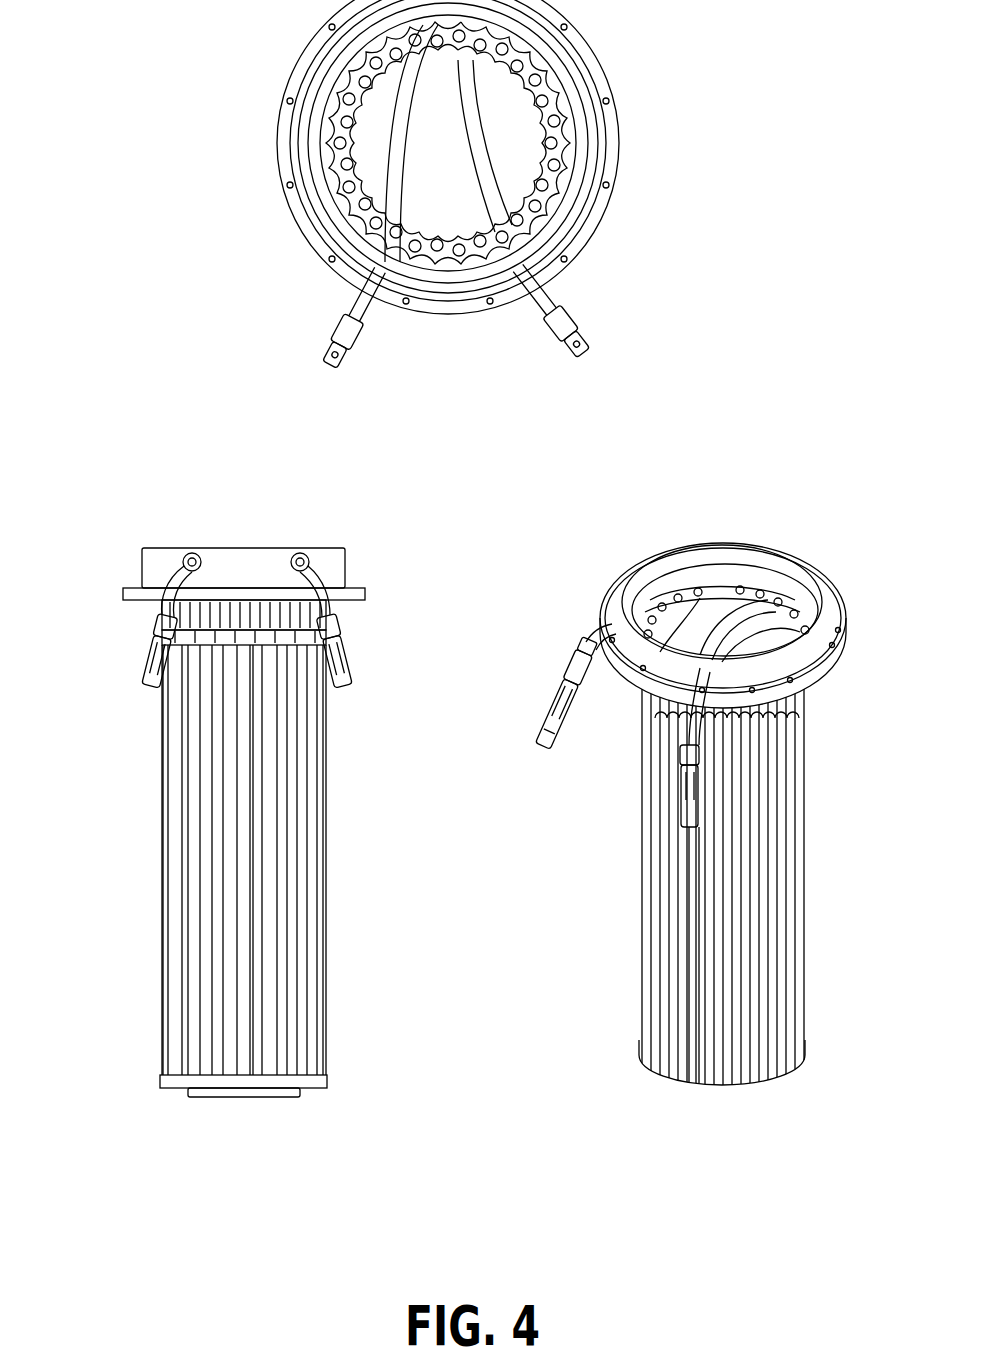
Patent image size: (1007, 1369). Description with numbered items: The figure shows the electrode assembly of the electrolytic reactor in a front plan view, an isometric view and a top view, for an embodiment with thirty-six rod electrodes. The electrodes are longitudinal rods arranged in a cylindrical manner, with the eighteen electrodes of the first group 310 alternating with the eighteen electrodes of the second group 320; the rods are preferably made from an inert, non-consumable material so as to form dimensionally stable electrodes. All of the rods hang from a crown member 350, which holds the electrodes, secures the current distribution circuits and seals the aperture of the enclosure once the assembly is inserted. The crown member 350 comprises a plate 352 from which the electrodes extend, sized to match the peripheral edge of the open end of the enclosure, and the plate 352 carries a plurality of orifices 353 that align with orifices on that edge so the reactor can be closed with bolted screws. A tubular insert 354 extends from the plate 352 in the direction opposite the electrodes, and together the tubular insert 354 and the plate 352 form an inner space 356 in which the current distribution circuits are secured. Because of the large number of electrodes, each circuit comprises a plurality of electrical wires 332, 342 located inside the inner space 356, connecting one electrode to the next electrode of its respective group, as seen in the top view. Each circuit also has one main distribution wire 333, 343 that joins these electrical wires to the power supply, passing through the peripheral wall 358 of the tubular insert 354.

The first group of N electrodes 310 is at (296, 966).
The second group of N electrodes 320 is at (300, 918).
The electrical wires 332 is at (340, 173).
The main distribution wire 333 is at (320, 371).
The electrical wires 342 is at (530, 97).
The main distribution wire 343 is at (590, 315).
The crown member 350 is at (703, 122).
The plate 352 is at (270, 136).
The orifices 353 is at (318, 68).
The tubular insert 354 is at (346, 566).
The inner space 356 is at (786, 575).
The peripheral wall 358 is at (732, 568).